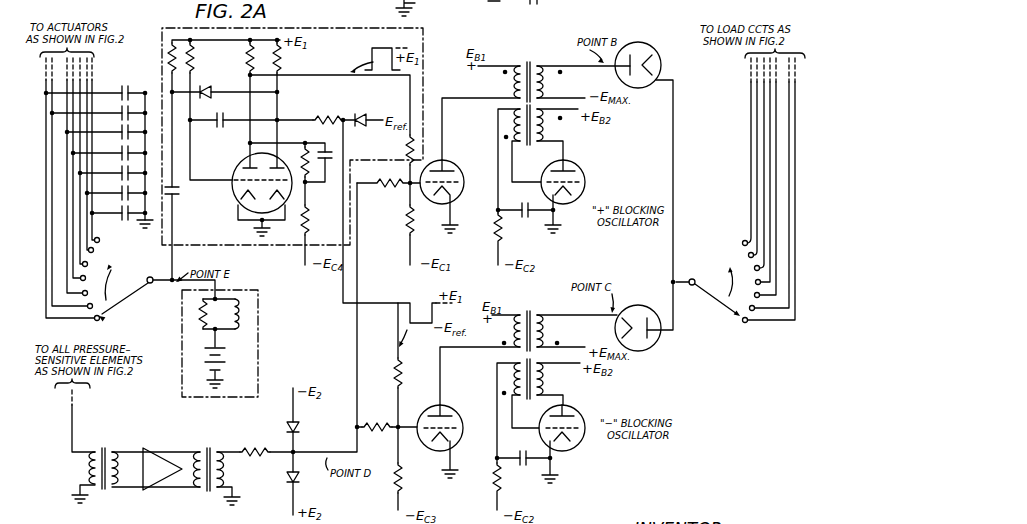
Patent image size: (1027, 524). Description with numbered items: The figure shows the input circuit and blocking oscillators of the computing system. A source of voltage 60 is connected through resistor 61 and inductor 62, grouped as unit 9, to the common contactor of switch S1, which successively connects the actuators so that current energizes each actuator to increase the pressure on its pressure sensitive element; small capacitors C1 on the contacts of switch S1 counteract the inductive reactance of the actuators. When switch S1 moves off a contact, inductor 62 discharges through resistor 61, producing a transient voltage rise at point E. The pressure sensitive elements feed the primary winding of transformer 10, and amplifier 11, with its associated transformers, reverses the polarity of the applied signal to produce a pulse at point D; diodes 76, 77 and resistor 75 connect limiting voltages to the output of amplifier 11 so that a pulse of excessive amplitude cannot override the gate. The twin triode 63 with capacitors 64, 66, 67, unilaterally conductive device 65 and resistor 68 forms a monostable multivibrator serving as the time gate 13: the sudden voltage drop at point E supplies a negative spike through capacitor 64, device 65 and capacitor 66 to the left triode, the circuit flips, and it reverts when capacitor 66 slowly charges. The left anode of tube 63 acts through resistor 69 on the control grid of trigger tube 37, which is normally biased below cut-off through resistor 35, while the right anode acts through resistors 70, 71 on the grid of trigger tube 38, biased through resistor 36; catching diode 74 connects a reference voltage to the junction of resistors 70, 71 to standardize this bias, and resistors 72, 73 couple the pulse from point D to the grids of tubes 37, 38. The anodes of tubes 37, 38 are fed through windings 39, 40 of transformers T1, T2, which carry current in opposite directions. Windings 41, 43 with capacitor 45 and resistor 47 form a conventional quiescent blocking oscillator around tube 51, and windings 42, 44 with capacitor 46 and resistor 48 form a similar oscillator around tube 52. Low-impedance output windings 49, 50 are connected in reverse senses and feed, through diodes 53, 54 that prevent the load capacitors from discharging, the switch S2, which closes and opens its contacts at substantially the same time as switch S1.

The tank circuit 9 is at (259, 342).
The transformer 10 is at (106, 451).
The amplifier 11 is at (156, 460).
The time gate 13 is at (292, 136).
The resistor 35 is at (403, 222).
The resistor 36 is at (404, 485).
The trigger tube 37 is at (461, 174).
The trigger tube 38 is at (458, 414).
The winding 39 is at (512, 80).
The winding 40 is at (512, 331).
The winding 41 is at (512, 125).
The winding 42 is at (512, 377).
The winding 43 is at (549, 133).
The winding 44 is at (549, 383).
The capacitor 45 is at (497, 209).
The capacitor 46 is at (523, 467).
The resistor 47 is at (504, 230).
The resistor 48 is at (492, 484).
The output winding 49 is at (551, 79).
The output winding 50 is at (550, 330).
The blocking oscillator tube 51 is at (584, 175).
The blocking oscillator tube 52 is at (580, 420).
The diode 53 is at (652, 53).
The diode 54 is at (648, 346).
The source of voltage 60 is at (232, 359).
The resistor 61 is at (196, 315).
The inductor 62 is at (243, 314).
The twin triode 63 is at (233, 193).
The capacitor 64 is at (177, 197).
The unilaterally conductive device 65 is at (210, 87).
The capacitor 66 is at (221, 128).
The capacitor 67 is at (329, 157).
The resistor 68 is at (309, 170).
The resistor 69 is at (405, 146).
The resistor 70 is at (324, 115).
The resistor 71 is at (395, 372).
The resistor 72 is at (384, 188).
The resistor 73 is at (378, 418).
The catching diode 74 is at (362, 114).
The resistor 75 is at (257, 462).
The diode 76 is at (300, 429).
The diode 77 is at (300, 482).
The small capacitors C1 is at (128, 88).
The switch S1 is at (117, 280).
The switch S2 is at (718, 282).
The transformer T1 is at (533, 92).
The transformer T2 is at (534, 345).